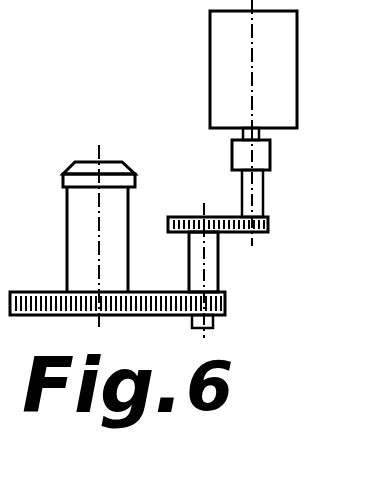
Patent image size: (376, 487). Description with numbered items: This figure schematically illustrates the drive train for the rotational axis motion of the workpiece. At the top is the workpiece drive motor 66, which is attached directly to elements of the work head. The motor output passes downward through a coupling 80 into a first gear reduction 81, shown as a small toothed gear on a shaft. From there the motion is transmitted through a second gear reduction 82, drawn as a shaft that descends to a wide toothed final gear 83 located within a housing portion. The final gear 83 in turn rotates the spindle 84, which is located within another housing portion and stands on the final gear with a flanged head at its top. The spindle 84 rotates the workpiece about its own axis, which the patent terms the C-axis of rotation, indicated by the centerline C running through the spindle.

The workpiece drive motor 66 is at (297, 70).
The coupling 80 is at (270, 158).
The first gear reduction 81 is at (225, 232).
The second gear reduction 82 is at (175, 292).
The final gear 83 is at (39, 292).
The spindle 84 is at (128, 215).
The C-axis of rotation C is at (102, 157).